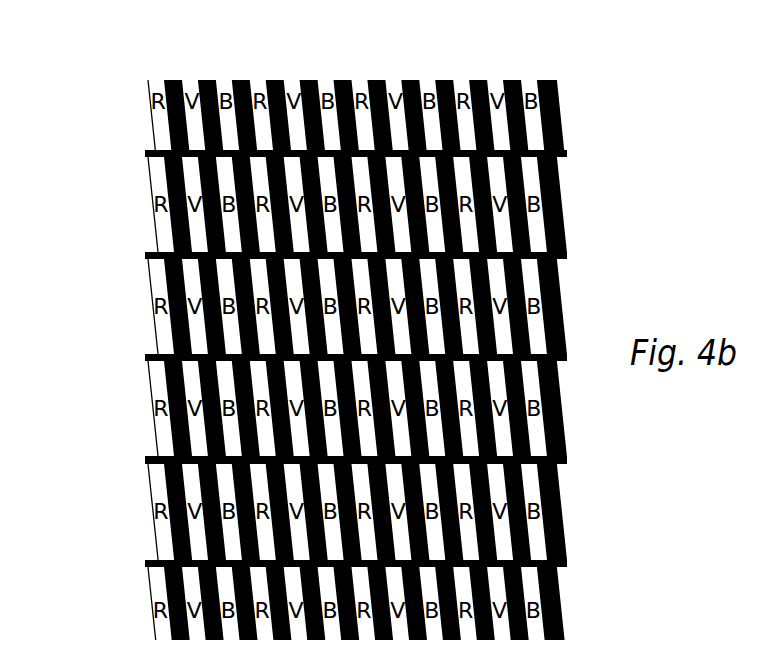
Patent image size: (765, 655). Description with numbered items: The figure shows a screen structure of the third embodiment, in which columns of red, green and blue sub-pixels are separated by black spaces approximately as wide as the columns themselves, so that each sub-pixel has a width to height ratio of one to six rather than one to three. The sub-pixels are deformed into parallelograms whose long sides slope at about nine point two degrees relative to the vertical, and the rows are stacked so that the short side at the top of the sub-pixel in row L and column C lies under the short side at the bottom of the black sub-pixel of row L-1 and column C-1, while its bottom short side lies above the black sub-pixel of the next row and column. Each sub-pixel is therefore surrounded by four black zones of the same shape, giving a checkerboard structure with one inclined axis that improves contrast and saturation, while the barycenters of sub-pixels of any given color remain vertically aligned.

The row L−1 L-1 is at (113, 115).
The row L is at (92, 205).
The column C−1 C-1 is at (303, 80).
The column C is at (328, 80).